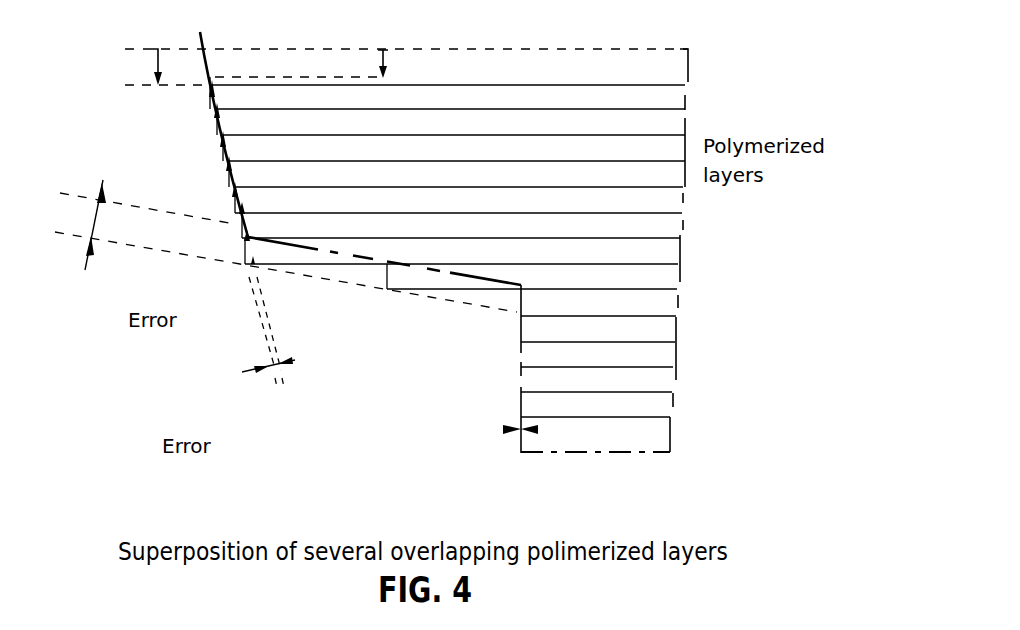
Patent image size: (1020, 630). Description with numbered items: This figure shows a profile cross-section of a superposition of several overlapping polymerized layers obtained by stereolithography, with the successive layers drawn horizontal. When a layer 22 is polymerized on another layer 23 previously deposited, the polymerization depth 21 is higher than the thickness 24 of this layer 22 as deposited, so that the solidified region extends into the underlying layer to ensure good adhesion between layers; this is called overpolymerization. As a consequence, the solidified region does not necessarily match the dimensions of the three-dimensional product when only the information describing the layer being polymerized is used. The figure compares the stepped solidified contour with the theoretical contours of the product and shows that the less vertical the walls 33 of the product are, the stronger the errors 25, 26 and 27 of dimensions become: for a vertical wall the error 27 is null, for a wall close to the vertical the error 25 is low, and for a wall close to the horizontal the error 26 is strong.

The polymerization depth 21 is at (158, 62).
The layer 22 is at (670, 69).
The previously deposited layer 23 is at (670, 100).
The thickness 24 is at (385, 50).
The error 25 is at (242, 372).
The error 26 is at (87, 260).
The error 27 is at (513, 432).
The walls 33 is at (521, 353).